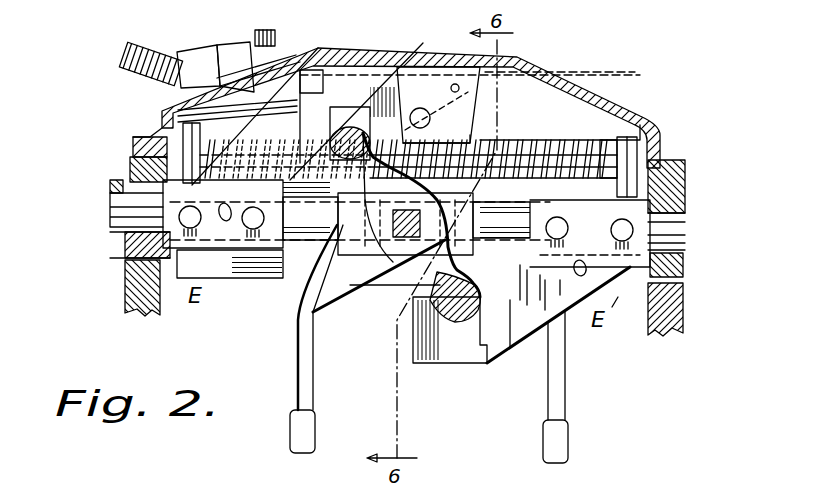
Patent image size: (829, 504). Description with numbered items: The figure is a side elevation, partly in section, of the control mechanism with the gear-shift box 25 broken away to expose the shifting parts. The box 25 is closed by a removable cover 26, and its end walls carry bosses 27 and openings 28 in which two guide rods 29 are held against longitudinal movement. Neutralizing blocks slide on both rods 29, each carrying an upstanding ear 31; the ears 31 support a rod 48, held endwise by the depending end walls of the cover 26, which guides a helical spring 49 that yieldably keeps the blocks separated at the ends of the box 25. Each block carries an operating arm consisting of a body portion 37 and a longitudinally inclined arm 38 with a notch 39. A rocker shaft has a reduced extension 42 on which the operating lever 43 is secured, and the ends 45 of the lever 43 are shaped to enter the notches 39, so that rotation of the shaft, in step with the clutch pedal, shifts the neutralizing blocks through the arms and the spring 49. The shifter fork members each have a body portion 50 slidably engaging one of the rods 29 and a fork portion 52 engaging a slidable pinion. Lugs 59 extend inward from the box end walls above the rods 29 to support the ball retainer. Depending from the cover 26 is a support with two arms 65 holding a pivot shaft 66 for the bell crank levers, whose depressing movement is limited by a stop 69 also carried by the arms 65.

The gear-shift box 25 is at (673, 213).
The removable cover 26 is at (660, 128).
The bosses 27 is at (127, 210).
The openings 28 is at (130, 180).
The guide rods 29 is at (125, 224).
The upstanding ear 31 is at (162, 125).
The body portion 37 is at (199, 284).
The longitudinally inclined arm 38 is at (500, 363).
The notch 39 is at (340, 105).
The reduced extension 42 is at (371, 317).
The operating lever 43 is at (433, 242).
The ends 45 is at (425, 50).
The rod 48 is at (408, 150).
The helical spring 49 is at (574, 147).
The body portion 50 is at (406, 231).
The fork portion 52 is at (307, 373).
The lugs 59 is at (573, 213).
The arms 65 is at (560, 106).
The pivot shaft 66 is at (455, 130).
The stop 69 is at (438, 105).